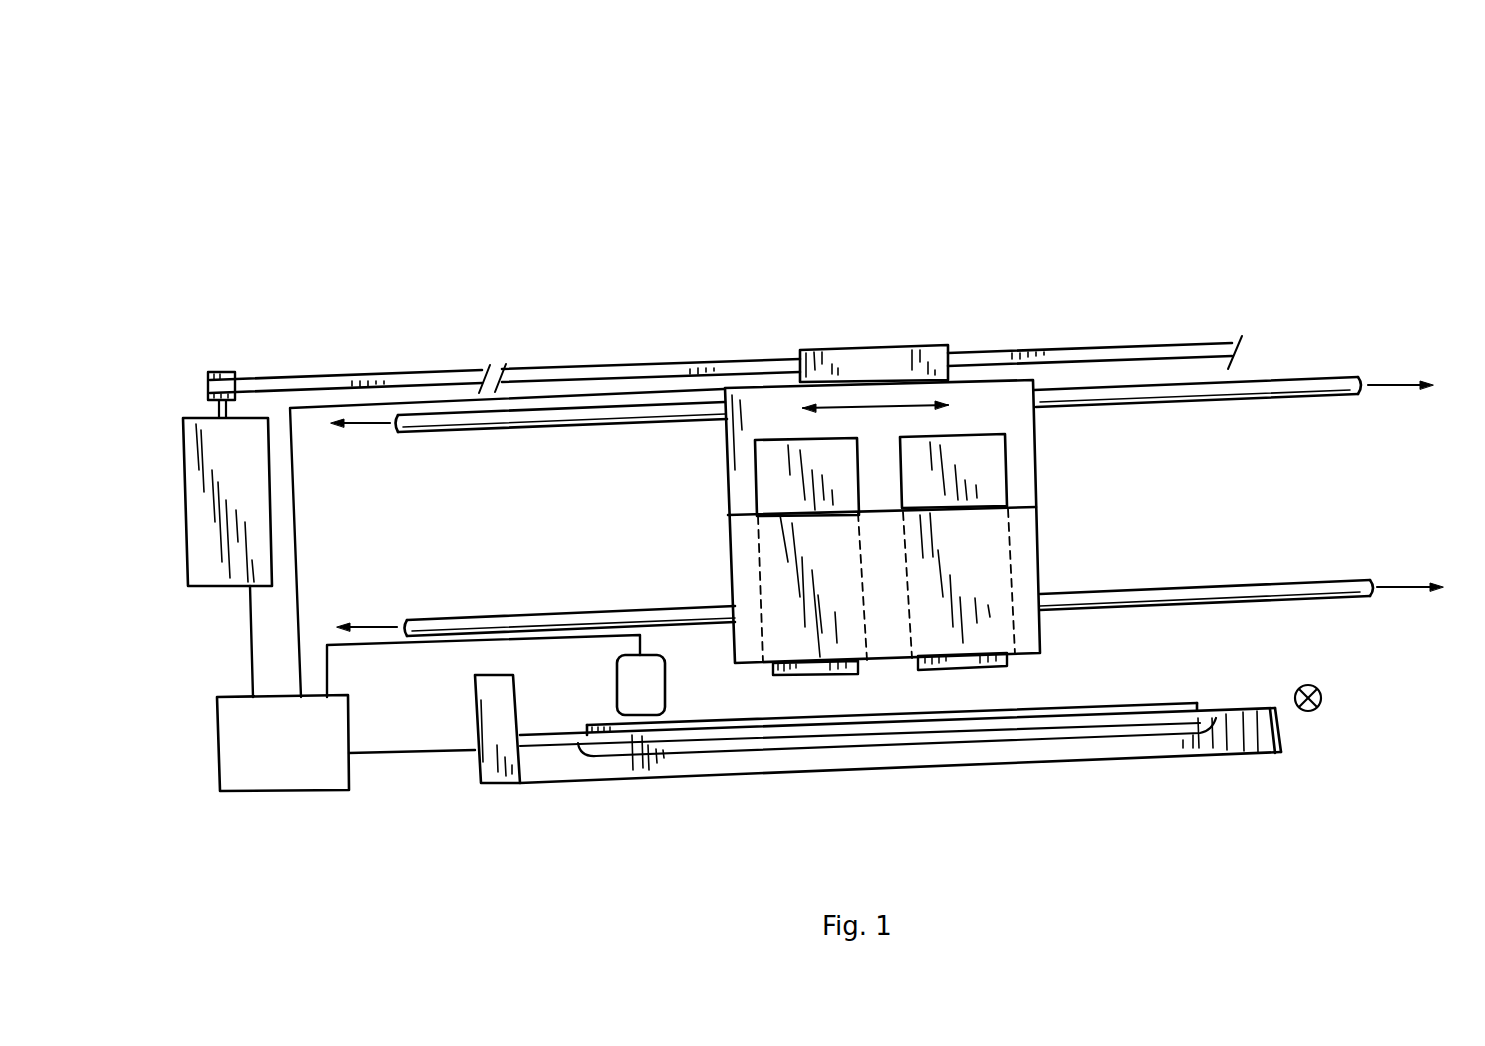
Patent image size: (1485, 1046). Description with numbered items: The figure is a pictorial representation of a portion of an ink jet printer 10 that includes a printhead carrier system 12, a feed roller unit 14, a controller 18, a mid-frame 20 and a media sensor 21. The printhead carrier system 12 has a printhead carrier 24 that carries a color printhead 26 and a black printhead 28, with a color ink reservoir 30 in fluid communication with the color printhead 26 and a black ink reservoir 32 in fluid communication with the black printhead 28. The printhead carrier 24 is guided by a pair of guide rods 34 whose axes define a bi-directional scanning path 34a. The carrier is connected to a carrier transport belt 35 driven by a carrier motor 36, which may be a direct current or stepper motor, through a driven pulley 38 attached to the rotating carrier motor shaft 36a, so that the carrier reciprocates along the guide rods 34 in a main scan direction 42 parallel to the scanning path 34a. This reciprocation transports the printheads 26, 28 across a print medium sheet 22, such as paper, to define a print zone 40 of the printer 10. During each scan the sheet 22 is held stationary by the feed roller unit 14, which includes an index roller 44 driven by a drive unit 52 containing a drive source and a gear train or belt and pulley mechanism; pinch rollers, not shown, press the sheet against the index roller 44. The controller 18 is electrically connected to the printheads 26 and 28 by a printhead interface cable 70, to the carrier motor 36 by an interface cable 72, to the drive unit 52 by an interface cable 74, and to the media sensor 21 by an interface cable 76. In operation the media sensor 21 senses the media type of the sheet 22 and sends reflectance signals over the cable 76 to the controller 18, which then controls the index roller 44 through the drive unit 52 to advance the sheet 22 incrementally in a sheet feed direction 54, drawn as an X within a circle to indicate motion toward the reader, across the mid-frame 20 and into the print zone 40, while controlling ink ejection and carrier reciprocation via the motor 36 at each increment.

The ink jet printer 10 is at (800, 470).
The printhead carrier system 12 is at (970, 296).
The feed roller unit 14 is at (440, 671).
The controller 18 is at (302, 755).
The mid-frame 20 is at (936, 735).
The media sensor 21 is at (663, 683).
The print medium sheet 22 is at (1173, 702).
The printhead carrier 24 is at (1040, 456).
The color printhead 26 is at (795, 675).
The black printhead 28 is at (987, 667).
The color ink reservoir 30 is at (777, 440).
The black ink reservoir 32 is at (973, 436).
The guide rods 34 is at (573, 429).
The bi-directional scanning path 34a is at (373, 423).
The carrier transport belt 35 is at (327, 379).
The carrier motor 36 is at (217, 588).
The carrier motor shaft 36a is at (217, 409).
The driven pulley 38 is at (226, 372).
The print zone 40 is at (873, 748).
The main scan direction 42 is at (875, 407).
The index roller 44 is at (573, 770).
The drive unit 52 is at (515, 697).
The sheet feed direction 54 is at (1321, 691).
The printhead interface cable 70 is at (299, 612).
The interface cable 72 is at (253, 682).
The interface cable 74 is at (410, 752).
The interface cable 76 is at (523, 641).